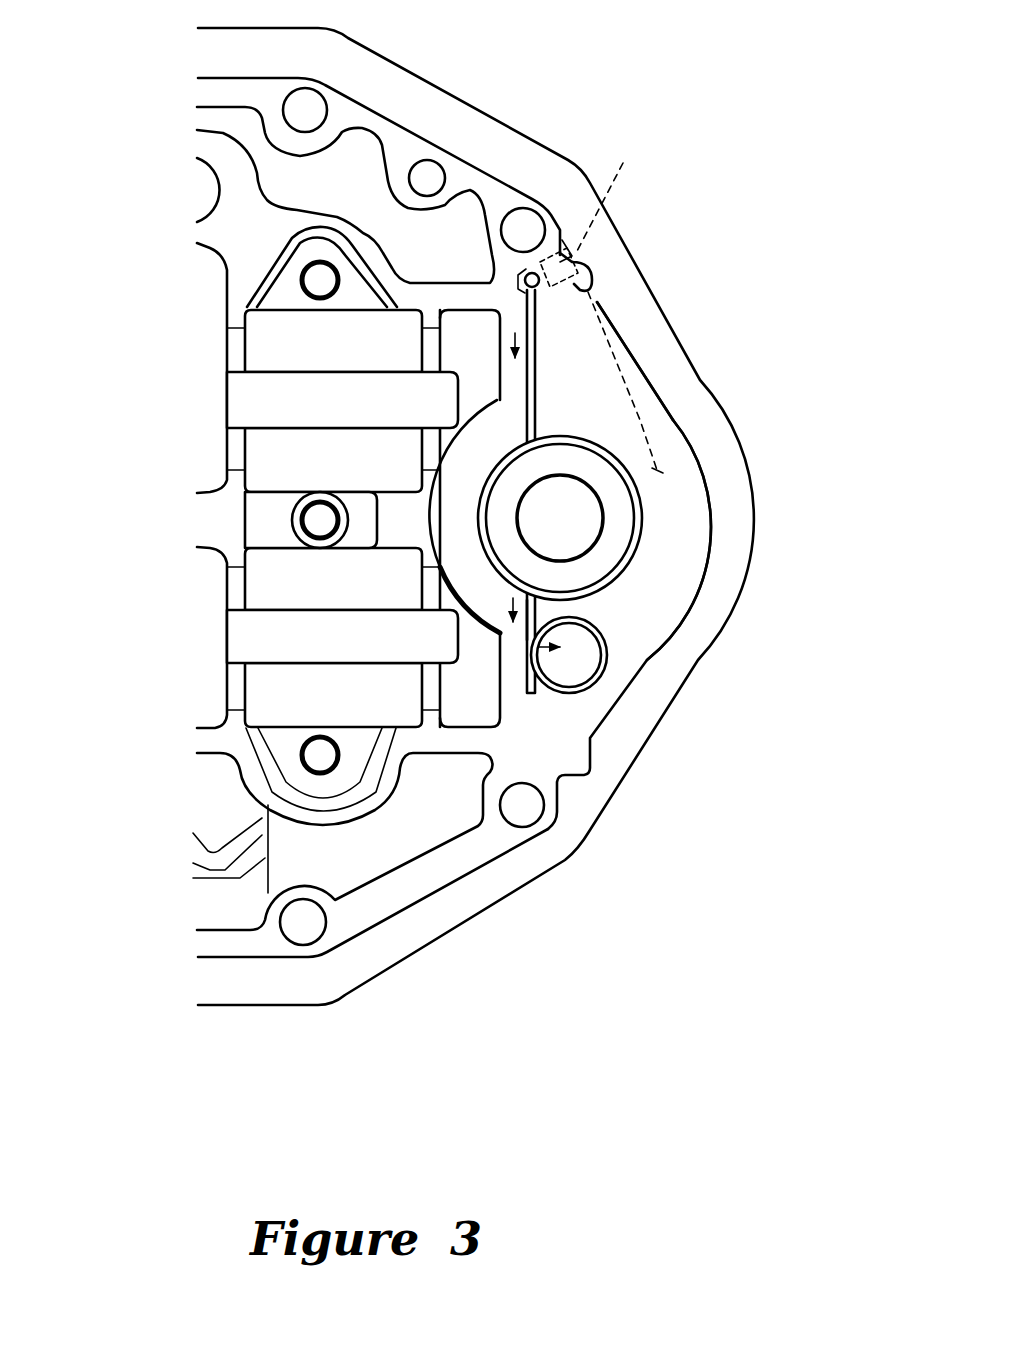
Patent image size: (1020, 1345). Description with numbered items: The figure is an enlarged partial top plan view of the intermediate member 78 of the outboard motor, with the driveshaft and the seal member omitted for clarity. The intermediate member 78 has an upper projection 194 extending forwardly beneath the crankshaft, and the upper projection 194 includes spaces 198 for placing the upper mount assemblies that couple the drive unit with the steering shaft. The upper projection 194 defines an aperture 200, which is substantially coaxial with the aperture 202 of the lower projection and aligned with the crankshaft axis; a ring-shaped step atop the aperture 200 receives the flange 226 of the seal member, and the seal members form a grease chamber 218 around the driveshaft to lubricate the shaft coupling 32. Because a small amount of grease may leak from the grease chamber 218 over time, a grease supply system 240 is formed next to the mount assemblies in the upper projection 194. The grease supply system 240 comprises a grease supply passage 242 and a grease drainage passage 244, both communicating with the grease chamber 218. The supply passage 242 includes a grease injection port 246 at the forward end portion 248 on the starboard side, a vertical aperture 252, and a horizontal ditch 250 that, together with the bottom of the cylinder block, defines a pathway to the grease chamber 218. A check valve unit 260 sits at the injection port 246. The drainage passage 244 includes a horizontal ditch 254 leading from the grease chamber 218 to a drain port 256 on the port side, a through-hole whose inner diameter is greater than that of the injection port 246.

The shaft coupling 32 is at (763, 397).
The intermediate member 78 is at (125, 105).
The upper projection 194 is at (693, 560).
The spaces 198 is at (282, 567).
The aperture 200 is at (623, 517).
The aperture 202 is at (580, 523).
The grease chamber 218 is at (603, 483).
The flange 226 is at (515, 462).
The grease supply system 240 is at (717, 367).
The grease supply passage 242 is at (550, 317).
The grease drainage passage 244 is at (553, 605).
The grease injection port 246 is at (633, 243).
The forward end portion 248 is at (660, 432).
The horizontal ditch 250 is at (540, 420).
The vertical aperture 252 is at (530, 272).
The horizontal ditch 254 is at (527, 628).
The drain port 256 is at (590, 657).
The check valve unit 260 is at (613, 283).